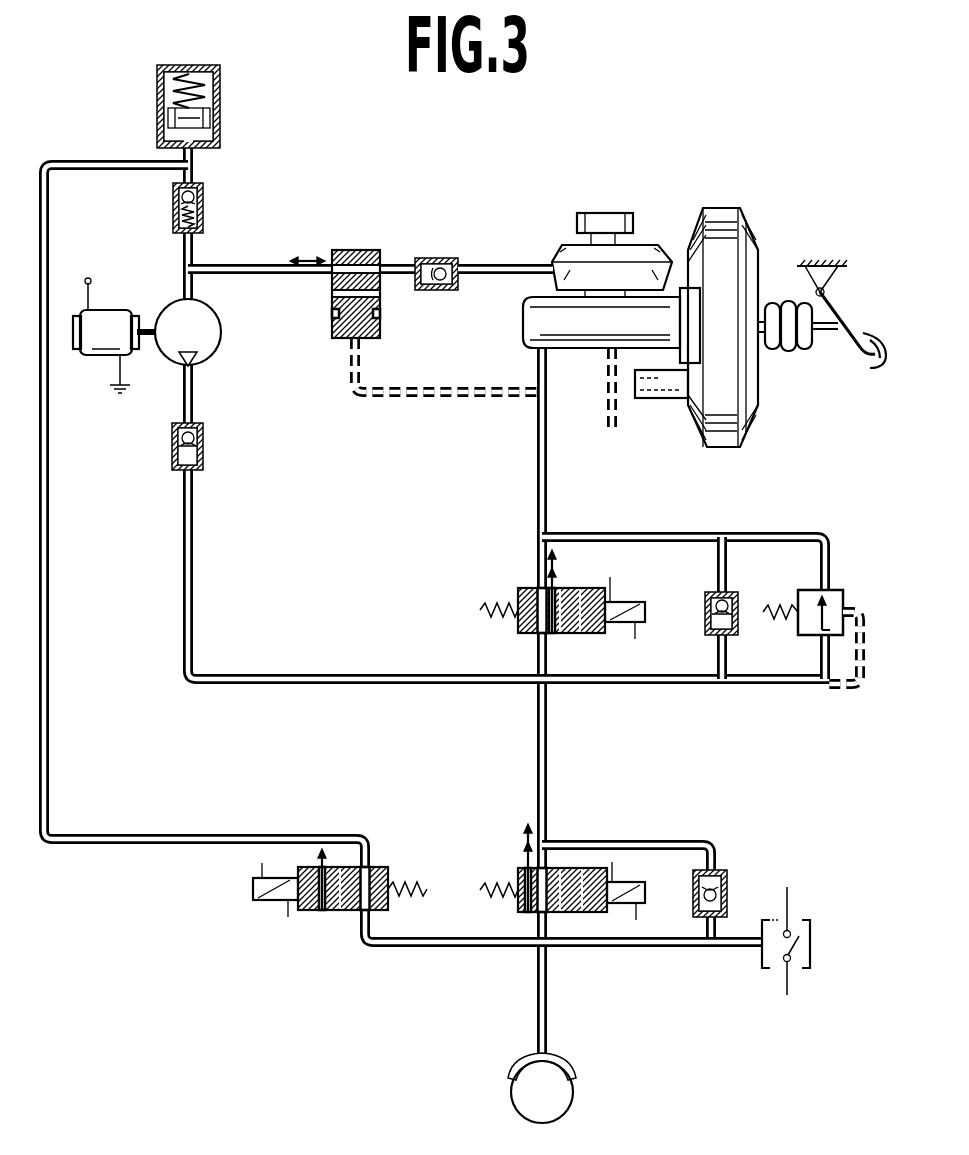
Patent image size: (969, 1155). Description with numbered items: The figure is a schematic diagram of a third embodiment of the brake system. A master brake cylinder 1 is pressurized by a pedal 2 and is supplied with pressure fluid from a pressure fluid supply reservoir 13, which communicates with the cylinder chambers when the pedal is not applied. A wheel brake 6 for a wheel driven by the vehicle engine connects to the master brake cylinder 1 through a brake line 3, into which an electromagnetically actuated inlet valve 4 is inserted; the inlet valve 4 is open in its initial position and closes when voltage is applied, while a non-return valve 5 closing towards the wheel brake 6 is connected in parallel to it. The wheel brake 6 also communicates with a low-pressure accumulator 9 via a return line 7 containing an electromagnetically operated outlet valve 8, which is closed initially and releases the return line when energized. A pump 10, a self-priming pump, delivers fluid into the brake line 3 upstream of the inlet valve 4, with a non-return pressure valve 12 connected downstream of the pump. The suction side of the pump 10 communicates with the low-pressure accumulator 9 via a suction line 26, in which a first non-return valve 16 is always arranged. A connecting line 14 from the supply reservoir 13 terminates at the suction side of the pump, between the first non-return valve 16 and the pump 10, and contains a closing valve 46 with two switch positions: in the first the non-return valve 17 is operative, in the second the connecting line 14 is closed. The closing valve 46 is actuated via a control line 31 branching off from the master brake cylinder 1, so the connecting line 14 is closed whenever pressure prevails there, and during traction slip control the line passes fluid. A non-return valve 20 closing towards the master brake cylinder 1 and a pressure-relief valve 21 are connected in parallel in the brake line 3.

The master brake cylinder 1 is at (596, 358).
The pedal 2 is at (822, 335).
The brake line 3 is at (546, 447).
The inlet valve 4 is at (562, 872).
The non-return valve 5 is at (735, 878).
The wheel brake 6 is at (565, 1097).
The return line 7 is at (203, 834).
The outlet valve 8 is at (386, 878).
The low-pressure accumulator 9 is at (220, 100).
The pump 10 is at (210, 322).
The non-return pressure valve 12 is at (204, 455).
The pressure fluid supply reservoir 13 is at (561, 248).
The connecting line 14 is at (521, 272).
The first non-return valve 16 is at (204, 212).
The non-return valve 17 is at (446, 258).
The non-return valve 20 is at (703, 604).
The pressure-relief valve 21 is at (858, 690).
The suction line 26 is at (194, 172).
The control line 31 is at (452, 389).
The closing valve 46 is at (354, 250).